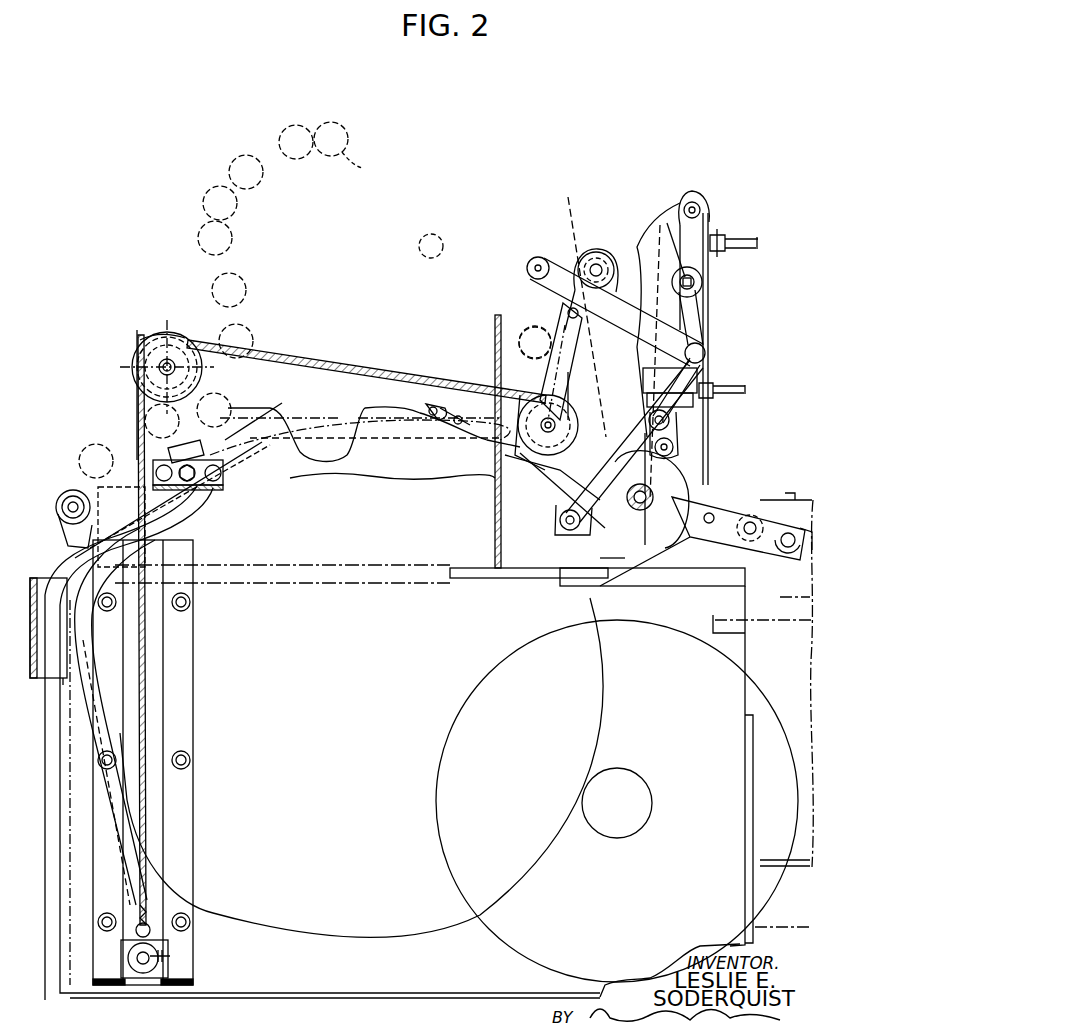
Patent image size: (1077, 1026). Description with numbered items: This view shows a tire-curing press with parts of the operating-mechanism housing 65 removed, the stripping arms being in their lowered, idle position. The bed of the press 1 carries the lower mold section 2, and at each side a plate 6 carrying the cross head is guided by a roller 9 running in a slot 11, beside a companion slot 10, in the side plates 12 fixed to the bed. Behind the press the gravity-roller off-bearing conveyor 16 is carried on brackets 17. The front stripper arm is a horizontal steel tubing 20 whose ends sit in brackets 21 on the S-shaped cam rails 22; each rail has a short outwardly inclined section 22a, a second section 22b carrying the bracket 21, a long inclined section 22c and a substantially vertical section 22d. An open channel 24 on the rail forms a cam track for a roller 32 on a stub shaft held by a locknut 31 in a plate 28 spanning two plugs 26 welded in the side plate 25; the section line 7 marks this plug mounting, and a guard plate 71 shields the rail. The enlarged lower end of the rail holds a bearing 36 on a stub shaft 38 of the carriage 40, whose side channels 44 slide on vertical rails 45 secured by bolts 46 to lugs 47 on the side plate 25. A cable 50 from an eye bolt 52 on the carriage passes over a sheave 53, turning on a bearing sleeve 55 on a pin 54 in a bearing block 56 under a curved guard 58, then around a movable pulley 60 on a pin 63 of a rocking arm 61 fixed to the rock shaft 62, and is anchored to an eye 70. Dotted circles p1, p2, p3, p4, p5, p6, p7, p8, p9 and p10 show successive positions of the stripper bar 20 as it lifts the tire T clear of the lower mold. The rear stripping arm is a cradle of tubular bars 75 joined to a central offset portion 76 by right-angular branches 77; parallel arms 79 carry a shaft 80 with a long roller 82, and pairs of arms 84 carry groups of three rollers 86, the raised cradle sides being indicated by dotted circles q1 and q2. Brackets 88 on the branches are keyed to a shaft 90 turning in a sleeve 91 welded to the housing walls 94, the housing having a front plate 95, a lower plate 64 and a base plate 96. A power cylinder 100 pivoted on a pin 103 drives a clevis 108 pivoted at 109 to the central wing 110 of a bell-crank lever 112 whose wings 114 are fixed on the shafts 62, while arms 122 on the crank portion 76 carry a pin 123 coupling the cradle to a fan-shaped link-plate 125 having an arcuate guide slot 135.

The bed of the press 1 is at (350, 588).
The lower mold section 2 is at (282, 545).
The plates 6 is at (40, 328).
The section line 7- 7 is at (150, 462).
The roller 9 is at (167, 400).
The slot 10 is at (643, 433).
The slot 11 is at (518, 522).
The side plates 12 is at (568, 372).
The off-bearing conveyor 16 is at (760, 506).
The brackets 17 is at (660, 575).
The front stripper arm 20 is at (73, 490).
The brackets 21 is at (150, 560).
The cam rails 22 is at (150, 873).
The outwardly inclined section 22a is at (190, 508).
The second section 22b is at (180, 535).
The inclined section 22c is at (95, 634).
The vertical section 22d is at (150, 815).
The open channel 24 is at (185, 520).
The side plate 25 is at (384, 723).
The plugs 26 is at (150, 458).
The plate 28 is at (225, 488).
The locknut 31 is at (270, 410).
The roller 32 is at (142, 504).
The bearing 36 is at (150, 963).
The stub shaft 38 is at (160, 950).
The carriage 40 is at (145, 978).
The channels 44 is at (170, 958).
The vertical rails 45 is at (192, 690).
The bolts 46 is at (192, 759).
The lugs 47 is at (192, 600).
The cables 50 is at (300, 368).
The eye bolt 52 is at (150, 924).
The sheave 53 is at (192, 368).
The pin 54 is at (170, 364).
The bearing sleeve 55 is at (140, 358).
The bearing block 56 is at (140, 372).
The curved guard 58 is at (148, 324).
The movable pulley 60 is at (525, 400).
The rocking arm 61 is at (520, 490).
The rock shaft 62 is at (740, 500).
The pin 63 is at (545, 422).
The plate 64 is at (705, 600).
The housing 65 is at (712, 292).
The eye 70 is at (448, 408).
The guard plate 71 is at (44, 585).
The tubular bar 75 is at (706, 353).
The central offset tubular portion 76 is at (535, 258).
The right angular branches 77 is at (637, 243).
The parallel arms 79 is at (692, 302).
The transverse shaft 80 is at (695, 278).
The long roller 82 is at (667, 223).
The arms 84 is at (700, 380).
The rollers 86 is at (668, 415).
The bracket 88 is at (608, 292).
The shaft 90 is at (597, 251).
The sleeve 91 is at (575, 304).
The vertical walls 94 is at (617, 248).
The vertical plate 95 is at (493, 530).
The base plate 96 is at (460, 578).
The power cylinder 100 is at (662, 354).
The pin 103 is at (700, 205).
The clevis 108 is at (678, 430).
The pivot 109 is at (673, 447).
The wing 110 is at (690, 470).
The bell-crank lever 112 is at (575, 535).
The wings 114 is at (600, 560).
The spaced arms 122 is at (556, 312).
The pin 123 is at (530, 345).
The link-plate 125 is at (576, 322).
The arcuate slot 135 is at (470, 462).
The tread T is at (320, 415).
The position p1 is at (104, 425).
The position p2 is at (180, 407).
The position p3 is at (228, 398).
The position p4 is at (253, 335).
The position p5 is at (246, 285).
The position p6 is at (233, 235).
The position p7 is at (238, 204).
The position p8 is at (264, 175).
The position p9 is at (297, 112).
The position p10 is at (382, 170).
The position q1 is at (443, 248).
The position q2 is at (525, 330).